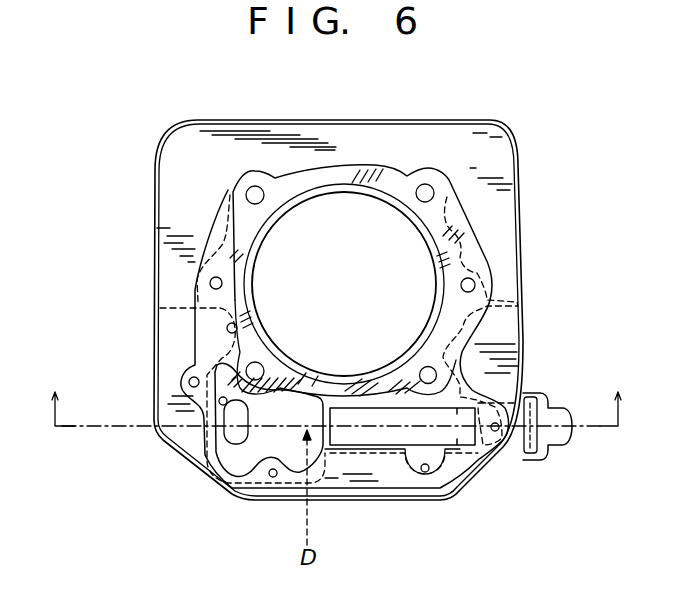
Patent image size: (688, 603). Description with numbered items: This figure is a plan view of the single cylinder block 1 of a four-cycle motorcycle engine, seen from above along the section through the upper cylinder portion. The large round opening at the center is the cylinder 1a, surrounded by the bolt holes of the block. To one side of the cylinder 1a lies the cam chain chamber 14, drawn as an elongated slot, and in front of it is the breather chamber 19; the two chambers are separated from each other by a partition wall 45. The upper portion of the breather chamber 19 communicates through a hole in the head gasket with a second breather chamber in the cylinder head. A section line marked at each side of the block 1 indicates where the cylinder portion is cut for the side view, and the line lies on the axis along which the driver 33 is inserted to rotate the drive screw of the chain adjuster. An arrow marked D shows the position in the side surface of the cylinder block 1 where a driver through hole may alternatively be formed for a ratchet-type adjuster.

The cylinder block 1 is at (483, 258).
The cylinder 1a is at (369, 194).
The cam chain chamber 14 is at (395, 428).
The breather chamber 19 is at (275, 440).
The driver 33 is at (128, 426).
The partition wall 45 is at (347, 433).